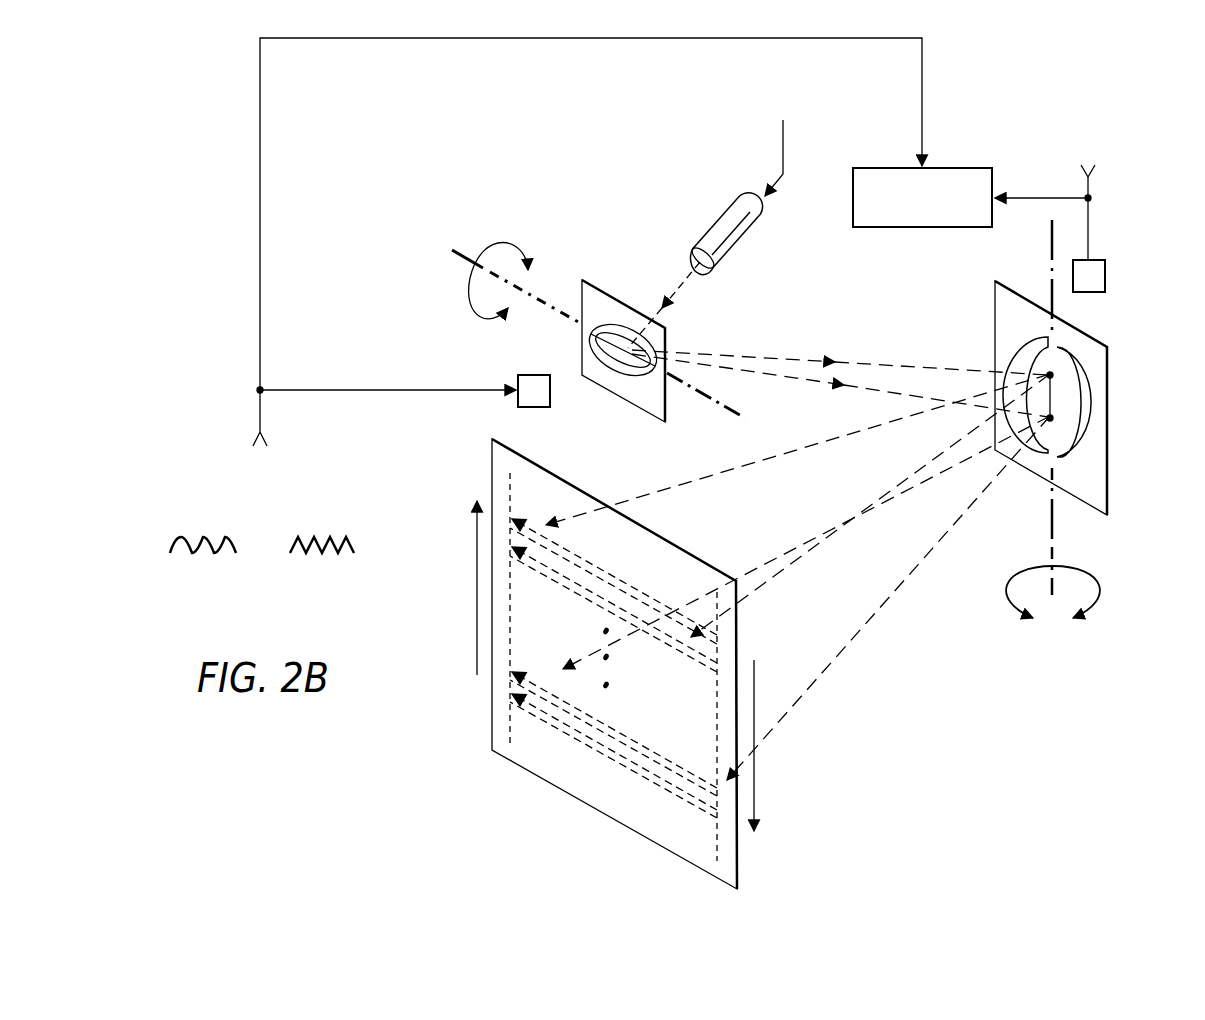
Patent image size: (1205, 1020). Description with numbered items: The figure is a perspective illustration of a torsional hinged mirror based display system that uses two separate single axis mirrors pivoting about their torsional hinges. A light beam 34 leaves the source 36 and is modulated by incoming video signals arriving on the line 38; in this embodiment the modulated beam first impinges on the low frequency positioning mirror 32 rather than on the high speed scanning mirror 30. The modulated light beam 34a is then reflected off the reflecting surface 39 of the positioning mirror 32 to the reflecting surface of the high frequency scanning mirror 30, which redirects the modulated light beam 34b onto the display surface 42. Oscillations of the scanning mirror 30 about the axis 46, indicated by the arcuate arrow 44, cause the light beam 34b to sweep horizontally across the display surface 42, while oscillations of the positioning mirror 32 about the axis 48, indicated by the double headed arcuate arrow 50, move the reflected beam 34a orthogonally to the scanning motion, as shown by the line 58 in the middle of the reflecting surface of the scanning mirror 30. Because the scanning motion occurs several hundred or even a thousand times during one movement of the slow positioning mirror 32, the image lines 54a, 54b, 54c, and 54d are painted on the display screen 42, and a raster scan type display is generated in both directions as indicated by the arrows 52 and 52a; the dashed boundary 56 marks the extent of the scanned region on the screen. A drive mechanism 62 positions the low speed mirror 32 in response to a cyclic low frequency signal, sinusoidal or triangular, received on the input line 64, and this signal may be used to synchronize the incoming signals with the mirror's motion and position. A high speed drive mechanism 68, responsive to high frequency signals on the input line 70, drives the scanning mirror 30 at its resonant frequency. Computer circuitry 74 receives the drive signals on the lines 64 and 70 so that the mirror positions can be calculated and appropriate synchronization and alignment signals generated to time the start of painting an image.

The scanning mirror 30 is at (1088, 398).
The positioning mirror 32 is at (660, 351).
The light beam 34 is at (688, 286).
The modulated light beam 34a is at (796, 360).
The modulated light beam 34b is at (790, 470).
The source 36 is at (722, 226).
The line 38 is at (784, 145).
The reflecting surface 39 is at (633, 365).
The display surface 42 is at (630, 827).
The arcuate arrow 44 is at (1096, 596).
The axis 46 is at (1053, 535).
The axis 48 is at (722, 412).
The double headed arcuate arrow 50 is at (510, 240).
The arrow 52 is at (756, 790).
The arrow 52a is at (474, 590).
The image line 54a is at (578, 542).
The image line 54b is at (582, 586).
The image line 54c is at (652, 750).
The image line 54d is at (562, 728).
The scan region boundary 56 is at (712, 845).
The line 58 is at (1052, 398).
The drive mechanism 62 is at (537, 375).
The input line 64 is at (922, 72).
The high speed drive mechanism 68 is at (1105, 282).
The input line 70 is at (1090, 238).
The computer circuitry 74 is at (853, 202).